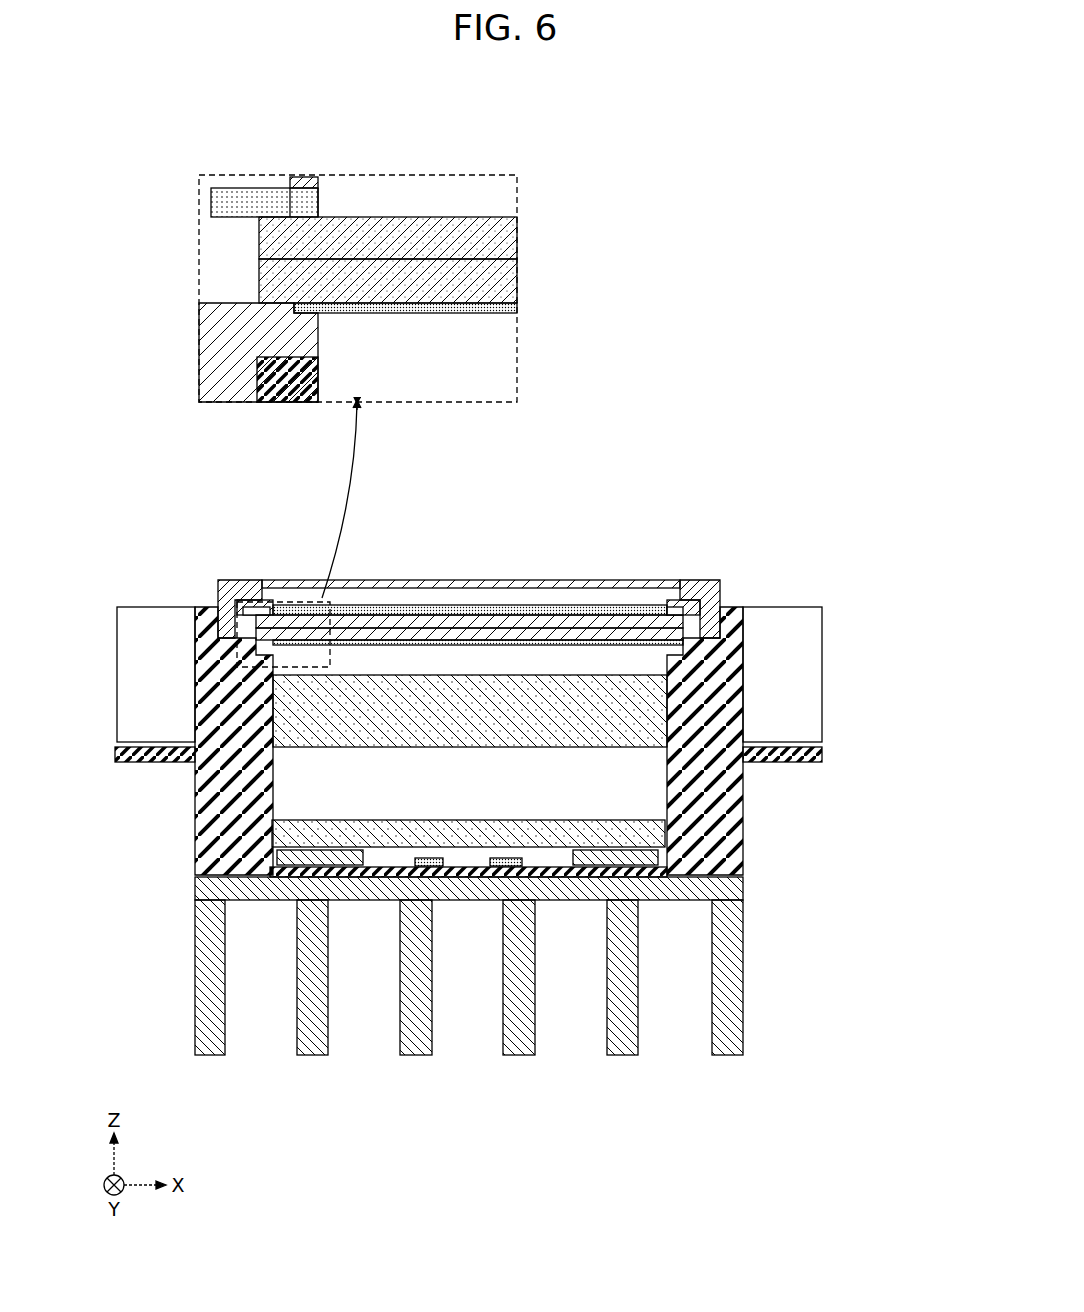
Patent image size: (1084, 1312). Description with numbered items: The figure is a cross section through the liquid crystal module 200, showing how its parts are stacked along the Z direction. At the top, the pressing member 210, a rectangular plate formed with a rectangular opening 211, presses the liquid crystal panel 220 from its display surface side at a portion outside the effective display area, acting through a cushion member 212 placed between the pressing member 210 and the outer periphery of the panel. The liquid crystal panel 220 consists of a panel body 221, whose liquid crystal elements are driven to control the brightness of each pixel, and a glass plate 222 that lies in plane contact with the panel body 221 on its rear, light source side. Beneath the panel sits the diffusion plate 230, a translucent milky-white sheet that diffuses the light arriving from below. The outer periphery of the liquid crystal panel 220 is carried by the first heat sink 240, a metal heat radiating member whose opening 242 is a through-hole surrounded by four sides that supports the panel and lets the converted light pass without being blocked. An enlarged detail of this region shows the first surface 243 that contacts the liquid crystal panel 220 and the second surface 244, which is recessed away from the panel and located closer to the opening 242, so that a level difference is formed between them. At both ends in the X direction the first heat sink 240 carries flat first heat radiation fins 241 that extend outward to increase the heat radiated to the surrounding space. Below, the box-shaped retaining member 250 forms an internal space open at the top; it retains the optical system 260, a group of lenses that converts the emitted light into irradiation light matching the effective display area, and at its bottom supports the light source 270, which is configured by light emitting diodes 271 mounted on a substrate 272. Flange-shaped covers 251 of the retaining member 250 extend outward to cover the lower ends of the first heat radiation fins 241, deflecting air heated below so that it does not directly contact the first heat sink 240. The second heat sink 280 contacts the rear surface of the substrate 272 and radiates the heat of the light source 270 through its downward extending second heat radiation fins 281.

The liquid crystal module 200 is at (705, 452).
The pressing member 210 is at (710, 580).
The opening 211 is at (292, 600).
The cushion member 212 is at (227, 190).
The liquid crystal panel 220 is at (469, 428).
The panel body 221 is at (517, 237).
The glass plate 222 is at (517, 287).
The diffusion plate 230 is at (470, 640).
The first heat sink 240 is at (506, 720).
The first heat radiation fins 241 is at (155, 620).
The opening 242 is at (322, 332).
The first surface 243 is at (278, 298).
The second surface 244 is at (308, 305).
The retaining member 250 is at (738, 862).
The covers 251 is at (152, 763).
The optical system 260 is at (527, 820).
The light source 270 is at (407, 863).
The light emitting diode 271 is at (502, 870).
The substrate 272 is at (357, 867).
The second heat sink 280 is at (525, 1005).
The second heat radiation fins 281 is at (207, 1057).